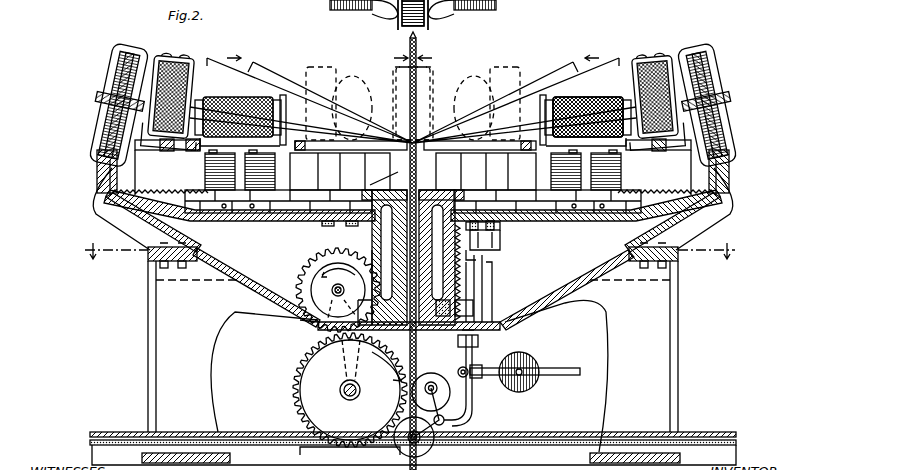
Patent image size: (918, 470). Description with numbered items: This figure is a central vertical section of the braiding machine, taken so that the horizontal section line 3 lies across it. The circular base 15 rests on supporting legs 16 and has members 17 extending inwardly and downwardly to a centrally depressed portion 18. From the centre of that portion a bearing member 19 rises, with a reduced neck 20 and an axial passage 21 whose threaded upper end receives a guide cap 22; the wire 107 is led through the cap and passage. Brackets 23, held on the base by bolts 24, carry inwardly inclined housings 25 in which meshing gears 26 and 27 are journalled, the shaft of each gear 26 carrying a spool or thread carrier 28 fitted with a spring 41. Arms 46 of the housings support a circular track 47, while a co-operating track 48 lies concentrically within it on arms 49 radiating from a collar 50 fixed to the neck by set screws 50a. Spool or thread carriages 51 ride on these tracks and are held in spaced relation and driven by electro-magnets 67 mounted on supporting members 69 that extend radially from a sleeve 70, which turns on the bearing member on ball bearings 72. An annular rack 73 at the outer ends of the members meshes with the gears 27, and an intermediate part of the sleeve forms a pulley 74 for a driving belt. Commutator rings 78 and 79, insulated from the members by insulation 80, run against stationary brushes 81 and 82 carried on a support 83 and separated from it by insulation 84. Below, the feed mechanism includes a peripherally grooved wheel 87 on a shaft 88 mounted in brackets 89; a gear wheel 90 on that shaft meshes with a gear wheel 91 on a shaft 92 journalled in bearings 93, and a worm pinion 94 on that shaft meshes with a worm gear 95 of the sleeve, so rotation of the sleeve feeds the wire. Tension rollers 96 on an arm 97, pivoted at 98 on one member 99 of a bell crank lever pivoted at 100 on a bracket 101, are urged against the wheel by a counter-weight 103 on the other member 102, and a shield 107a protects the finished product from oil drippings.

The section line 3— 3 is at (408, 251).
The base 15 is at (150, 268).
The supporting legs 16 is at (156, 365).
The members 17 is at (262, 300).
The centrally depressed portion 18 is at (505, 330).
The bearing member 19 is at (382, 261).
The neck 20 is at (428, 166).
The axial passage 21 is at (447, 238).
The guide cap 22 is at (455, 156).
The brackets 23 is at (112, 222).
The bolts 24 is at (182, 270).
The housings 25 is at (105, 113).
The gear 26 is at (118, 63).
The gear 27 is at (97, 178).
The spool or thread carrier 28 is at (145, 152).
The spring 41 is at (165, 56).
The arms 46 is at (167, 152).
The circular track 47 is at (193, 152).
The co-operating track 48 is at (535, 152).
The arms 49 is at (333, 156).
The collar 50 is at (395, 164).
The set screws 50a is at (368, 180).
The spool or thread carriages 51 is at (228, 137).
The electro-magnets 67 is at (276, 172).
The supporting members 69 is at (250, 221).
The sleeve 70 is at (372, 241).
The ball bearings 72 is at (448, 188).
The annular rack 73 is at (362, 10).
The pulley 74 is at (478, 270).
The commutator ring 78 is at (322, 226).
The commutator ring 79 is at (348, 228).
The insulation 80 is at (500, 226).
The brush 81 is at (500, 238).
The brush 82 is at (498, 246).
The support 83 is at (494, 286).
The insulation 84 is at (478, 257).
The peripherally grooved wheel 87 is at (304, 396).
The shaft 88 is at (350, 400).
The brackets 89 is at (342, 361).
The gear wheel 90 is at (304, 371).
The gear wheel 91 is at (318, 258).
The shaft 92 is at (342, 290).
The bearings 93 is at (310, 320).
The worm pinion 94 is at (312, 278).
The worm gear 95 is at (478, 290).
The tension rollers 96 is at (414, 396).
The arm 97 is at (430, 438).
The pivot 98 is at (444, 422).
The bell crank lever member 99 is at (473, 412).
The pivot 100 is at (468, 376).
The bracket 101 is at (470, 350).
The bell crank lever member 102 is at (555, 376).
The counter-weight 103 is at (538, 360).
The wire 107 is at (417, 55).
The shield 107a is at (122, 432).